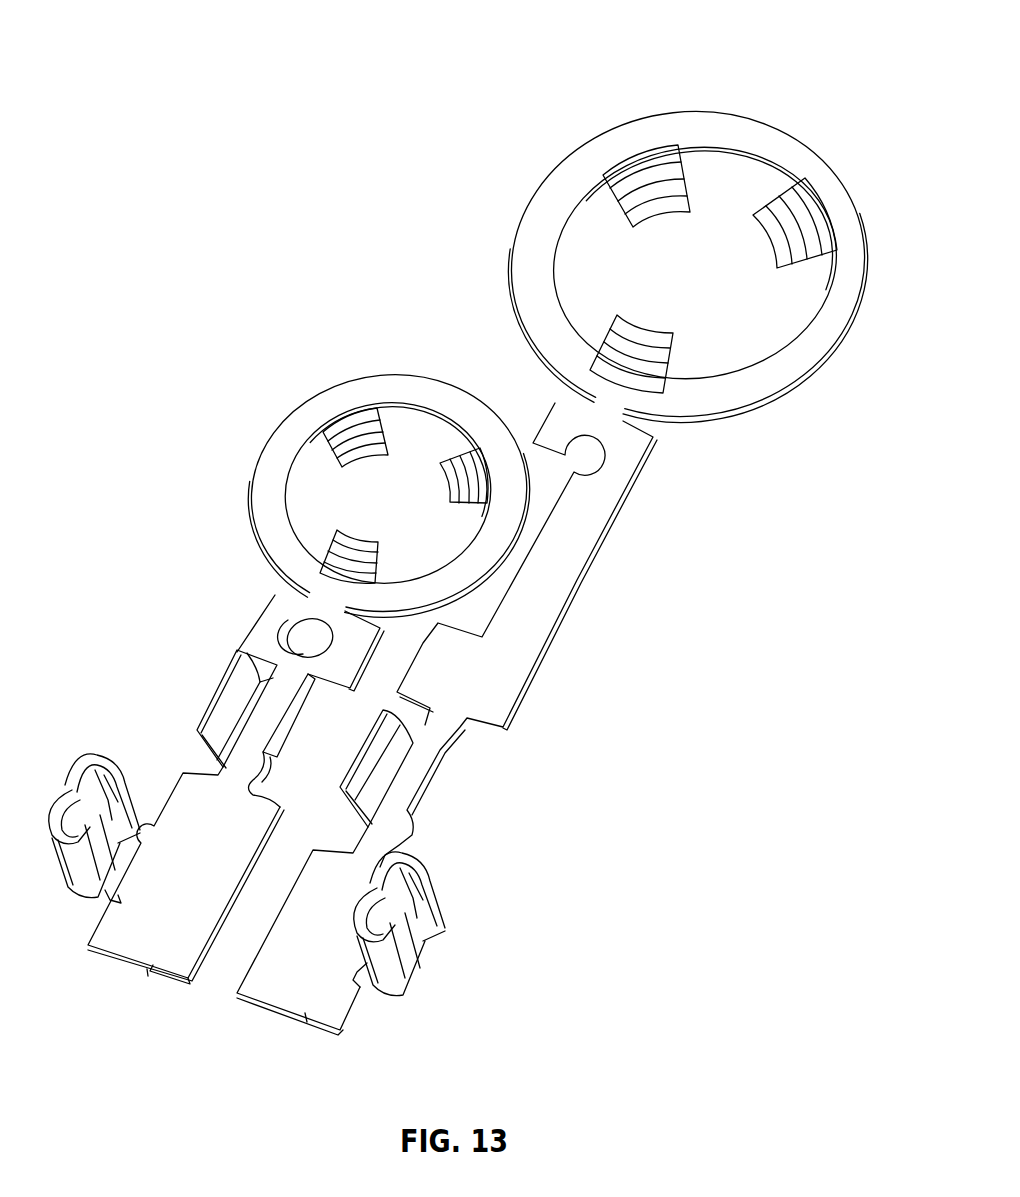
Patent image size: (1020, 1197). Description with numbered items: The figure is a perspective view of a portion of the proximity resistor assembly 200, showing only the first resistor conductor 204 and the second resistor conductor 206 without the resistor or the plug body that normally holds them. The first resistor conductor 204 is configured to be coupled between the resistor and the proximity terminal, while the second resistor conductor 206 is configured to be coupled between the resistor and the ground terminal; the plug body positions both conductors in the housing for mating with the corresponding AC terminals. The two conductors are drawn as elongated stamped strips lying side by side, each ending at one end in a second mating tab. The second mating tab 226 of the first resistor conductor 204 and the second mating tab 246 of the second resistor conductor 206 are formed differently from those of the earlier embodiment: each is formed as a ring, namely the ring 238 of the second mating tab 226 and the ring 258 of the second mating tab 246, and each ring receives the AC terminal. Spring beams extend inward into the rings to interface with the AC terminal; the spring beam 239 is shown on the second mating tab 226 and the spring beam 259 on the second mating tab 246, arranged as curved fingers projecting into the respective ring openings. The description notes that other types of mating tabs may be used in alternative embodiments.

The proximity resistor assembly 200 is at (394, 283).
The first resistor conductor 204 is at (157, 928).
The second resistor conductor 206 is at (305, 975).
The second mating tab 226 is at (340, 405).
The ring 238 is at (275, 543).
The spring beam 239 is at (367, 455).
The second mating tab 246 is at (760, 143).
The ring 258 is at (807, 337).
The spring beam 259 is at (663, 225).